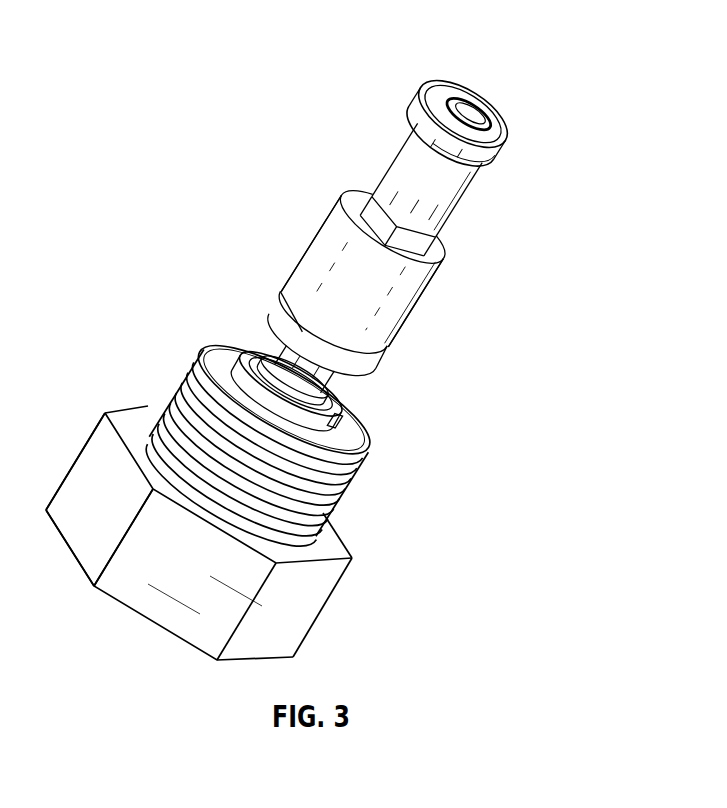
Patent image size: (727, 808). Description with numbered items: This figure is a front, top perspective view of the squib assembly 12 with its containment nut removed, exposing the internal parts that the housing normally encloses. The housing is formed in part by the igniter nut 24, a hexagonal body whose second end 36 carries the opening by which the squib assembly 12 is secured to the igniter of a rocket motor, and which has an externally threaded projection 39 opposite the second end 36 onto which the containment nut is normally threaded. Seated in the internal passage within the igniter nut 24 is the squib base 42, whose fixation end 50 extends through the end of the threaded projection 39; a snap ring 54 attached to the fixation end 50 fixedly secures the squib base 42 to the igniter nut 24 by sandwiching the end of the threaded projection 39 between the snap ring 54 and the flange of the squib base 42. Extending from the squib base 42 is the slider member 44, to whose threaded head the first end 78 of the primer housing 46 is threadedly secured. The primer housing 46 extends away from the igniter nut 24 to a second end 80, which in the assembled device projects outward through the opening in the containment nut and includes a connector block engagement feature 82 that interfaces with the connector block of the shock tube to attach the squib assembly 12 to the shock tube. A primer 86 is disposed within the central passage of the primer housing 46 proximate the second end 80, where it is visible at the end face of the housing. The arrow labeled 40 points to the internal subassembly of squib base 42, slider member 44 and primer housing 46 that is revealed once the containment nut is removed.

The squib assembly 12 is at (518, 308).
The igniter nut 24 is at (338, 586).
The second end 36 is at (120, 604).
The externally threaded projection 39 is at (364, 462).
The connector body 40 is at (422, 337).
The squib base 42 is at (267, 352).
The slider member 44 is at (376, 366).
The primer housing 46 is at (430, 286).
The fixation end 50 is at (247, 349).
The snap ring 54 is at (339, 405).
The first end 78 is at (334, 226).
The second end 80 is at (499, 131).
The connector block engagement feature 82 is at (499, 156).
The primer 86 is at (467, 109).